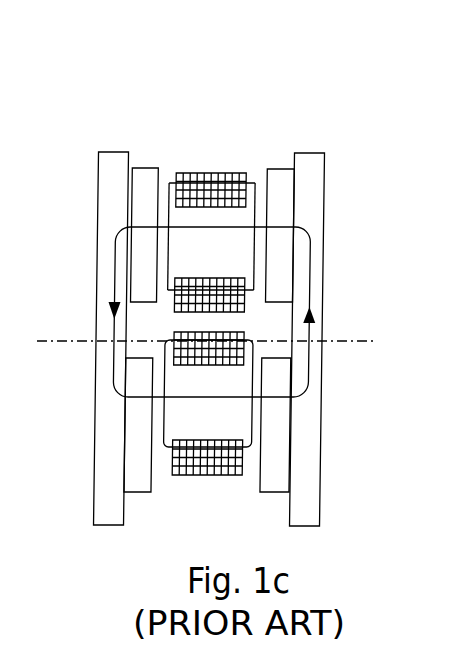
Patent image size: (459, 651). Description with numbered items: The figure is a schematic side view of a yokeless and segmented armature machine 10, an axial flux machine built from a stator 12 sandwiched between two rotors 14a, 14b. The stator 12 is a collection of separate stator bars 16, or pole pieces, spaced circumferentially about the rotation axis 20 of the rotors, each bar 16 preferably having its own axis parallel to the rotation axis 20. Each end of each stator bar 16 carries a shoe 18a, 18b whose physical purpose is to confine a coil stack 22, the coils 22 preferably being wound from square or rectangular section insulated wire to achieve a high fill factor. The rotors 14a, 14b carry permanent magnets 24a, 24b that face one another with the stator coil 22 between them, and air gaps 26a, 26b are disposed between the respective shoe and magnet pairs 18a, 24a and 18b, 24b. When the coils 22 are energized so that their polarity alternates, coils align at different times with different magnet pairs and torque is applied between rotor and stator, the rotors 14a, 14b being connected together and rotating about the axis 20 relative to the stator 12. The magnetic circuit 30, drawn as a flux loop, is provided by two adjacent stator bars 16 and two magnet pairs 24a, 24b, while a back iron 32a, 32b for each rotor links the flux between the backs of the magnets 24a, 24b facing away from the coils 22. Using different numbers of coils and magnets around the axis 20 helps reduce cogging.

The yokeless and segmented armature machine 10 is at (250, 62).
The stator 12 is at (194, 491).
The rotor 14a is at (103, 526).
The rotor 14b is at (304, 528).
The stator bar 16 is at (207, 214).
The shoe 18a is at (168, 188).
The shoe 18b is at (258, 170).
The rotation axis 20 is at (58, 340).
The coil stack 22 is at (183, 173).
The permanent magnet 24a is at (140, 268).
The permanent magnet 24b is at (280, 278).
The air gap 26a is at (161, 188).
The air gap 26b is at (260, 193).
The magnetic circuit 30 is at (323, 363).
The back iron 32a is at (104, 487).
The back iron 32b is at (305, 478).